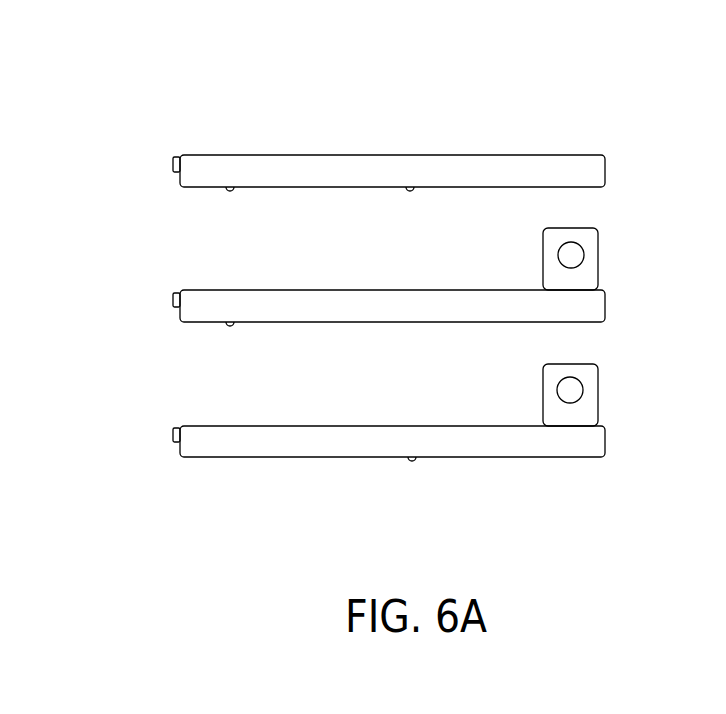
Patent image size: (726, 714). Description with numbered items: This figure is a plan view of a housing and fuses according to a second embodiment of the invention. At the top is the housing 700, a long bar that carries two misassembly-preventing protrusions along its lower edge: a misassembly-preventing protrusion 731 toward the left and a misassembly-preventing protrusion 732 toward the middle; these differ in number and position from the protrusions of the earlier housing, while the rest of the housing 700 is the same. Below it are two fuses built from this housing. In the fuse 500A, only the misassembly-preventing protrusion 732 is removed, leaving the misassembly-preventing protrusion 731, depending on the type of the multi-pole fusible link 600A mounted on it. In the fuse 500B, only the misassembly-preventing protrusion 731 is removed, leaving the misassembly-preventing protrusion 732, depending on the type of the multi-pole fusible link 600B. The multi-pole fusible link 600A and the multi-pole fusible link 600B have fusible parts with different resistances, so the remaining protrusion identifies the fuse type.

The housing 700 is at (593, 136).
The misassembly-preventing protrusion 731 is at (227, 193).
The misassembly-preventing protrusion 732 is at (409, 193).
The fuse 500A is at (628, 306).
The fuse 500B is at (628, 442).
The multi-pole fusible link 600A is at (578, 282).
The multi-pole fusible link 600B is at (578, 418).